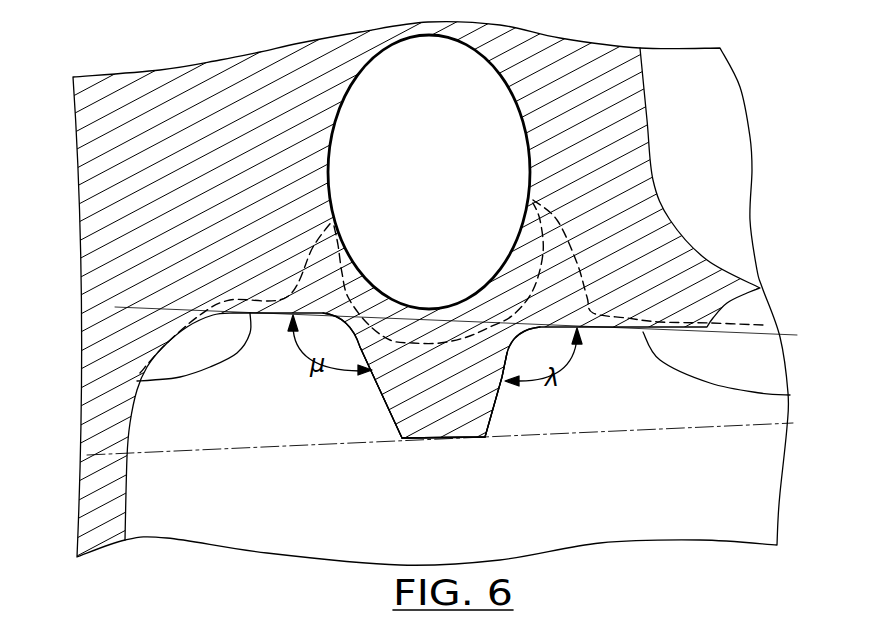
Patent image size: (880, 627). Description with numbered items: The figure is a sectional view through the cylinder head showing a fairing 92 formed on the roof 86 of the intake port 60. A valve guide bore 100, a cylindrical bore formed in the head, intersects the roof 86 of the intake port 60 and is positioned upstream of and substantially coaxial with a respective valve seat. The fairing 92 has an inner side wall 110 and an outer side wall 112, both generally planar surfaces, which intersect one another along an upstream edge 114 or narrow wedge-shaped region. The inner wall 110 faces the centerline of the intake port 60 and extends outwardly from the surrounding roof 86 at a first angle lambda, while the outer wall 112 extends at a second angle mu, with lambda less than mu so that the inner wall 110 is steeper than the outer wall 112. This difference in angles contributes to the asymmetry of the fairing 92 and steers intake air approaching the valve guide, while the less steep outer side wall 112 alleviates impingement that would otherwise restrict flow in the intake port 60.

The intake port 60 is at (648, 502).
The roof 86 is at (137, 380).
The fairing 92 is at (440, 395).
The valve guide bore 100 is at (448, 185).
The inner side wall 110 is at (502, 397).
The outer side wall 112 is at (377, 397).
The upstream edge 114 is at (440, 440).